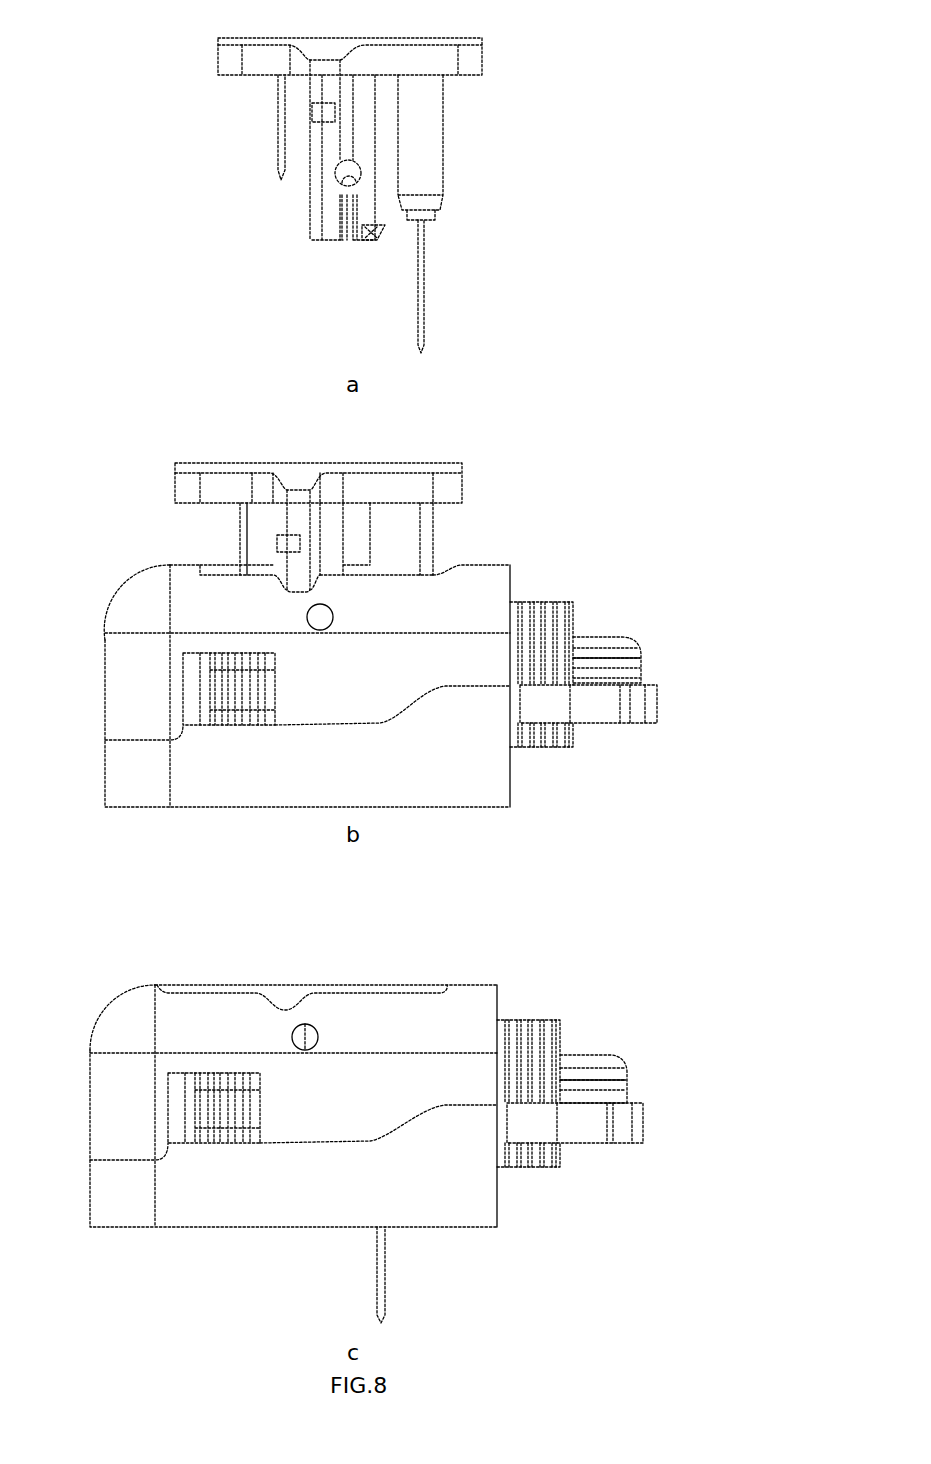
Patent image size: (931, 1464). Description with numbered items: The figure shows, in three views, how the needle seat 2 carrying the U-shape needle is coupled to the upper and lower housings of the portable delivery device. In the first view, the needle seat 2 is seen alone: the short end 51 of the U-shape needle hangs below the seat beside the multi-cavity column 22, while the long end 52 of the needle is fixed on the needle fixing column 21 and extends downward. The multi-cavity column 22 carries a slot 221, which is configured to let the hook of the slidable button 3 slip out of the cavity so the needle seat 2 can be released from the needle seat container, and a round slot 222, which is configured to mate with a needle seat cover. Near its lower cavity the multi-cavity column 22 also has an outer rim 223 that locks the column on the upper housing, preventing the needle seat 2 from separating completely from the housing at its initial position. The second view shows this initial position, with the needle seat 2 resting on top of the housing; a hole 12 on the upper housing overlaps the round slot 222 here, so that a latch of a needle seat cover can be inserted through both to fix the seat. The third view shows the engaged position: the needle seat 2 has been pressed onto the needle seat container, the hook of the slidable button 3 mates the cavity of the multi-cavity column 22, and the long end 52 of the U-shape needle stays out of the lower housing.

The needle seat 2 is at (307, 482).
The needle fixing column 21 is at (393, 552).
The multi-cavity column 22 is at (362, 153).
The slot 221 is at (327, 110).
The round slot 222 is at (352, 180).
The outer rim 223 is at (372, 240).
The short end of the U-shape needle 51 is at (283, 100).
The long end of the U-shape needle 52 is at (422, 262).
The slidable button 3 is at (238, 707).
The hole 12 is at (333, 618).